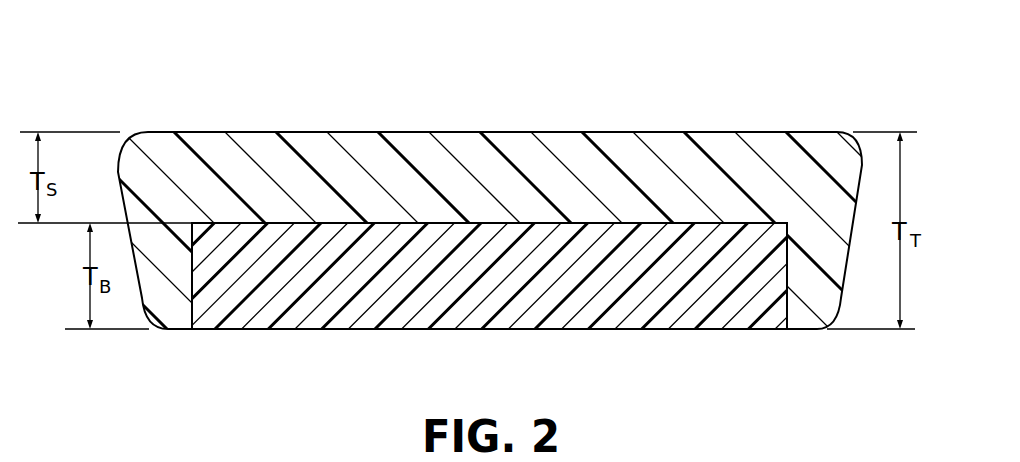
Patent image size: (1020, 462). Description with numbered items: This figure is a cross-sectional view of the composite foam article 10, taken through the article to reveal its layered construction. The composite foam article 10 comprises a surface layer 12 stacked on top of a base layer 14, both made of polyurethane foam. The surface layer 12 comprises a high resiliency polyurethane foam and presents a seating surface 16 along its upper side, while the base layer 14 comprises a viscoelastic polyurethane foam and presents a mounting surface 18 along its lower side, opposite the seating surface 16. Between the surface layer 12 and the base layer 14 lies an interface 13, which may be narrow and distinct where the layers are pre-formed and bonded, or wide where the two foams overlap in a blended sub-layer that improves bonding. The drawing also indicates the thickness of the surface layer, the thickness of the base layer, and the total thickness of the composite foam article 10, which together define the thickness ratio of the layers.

The composite foam article 10 is at (510, 194).
The surface layer 12 is at (503, 193).
The interface 13 is at (653, 224).
The base layer 14 is at (503, 290).
The seating surface 16 is at (564, 131).
The mounting surface 18 is at (288, 331).